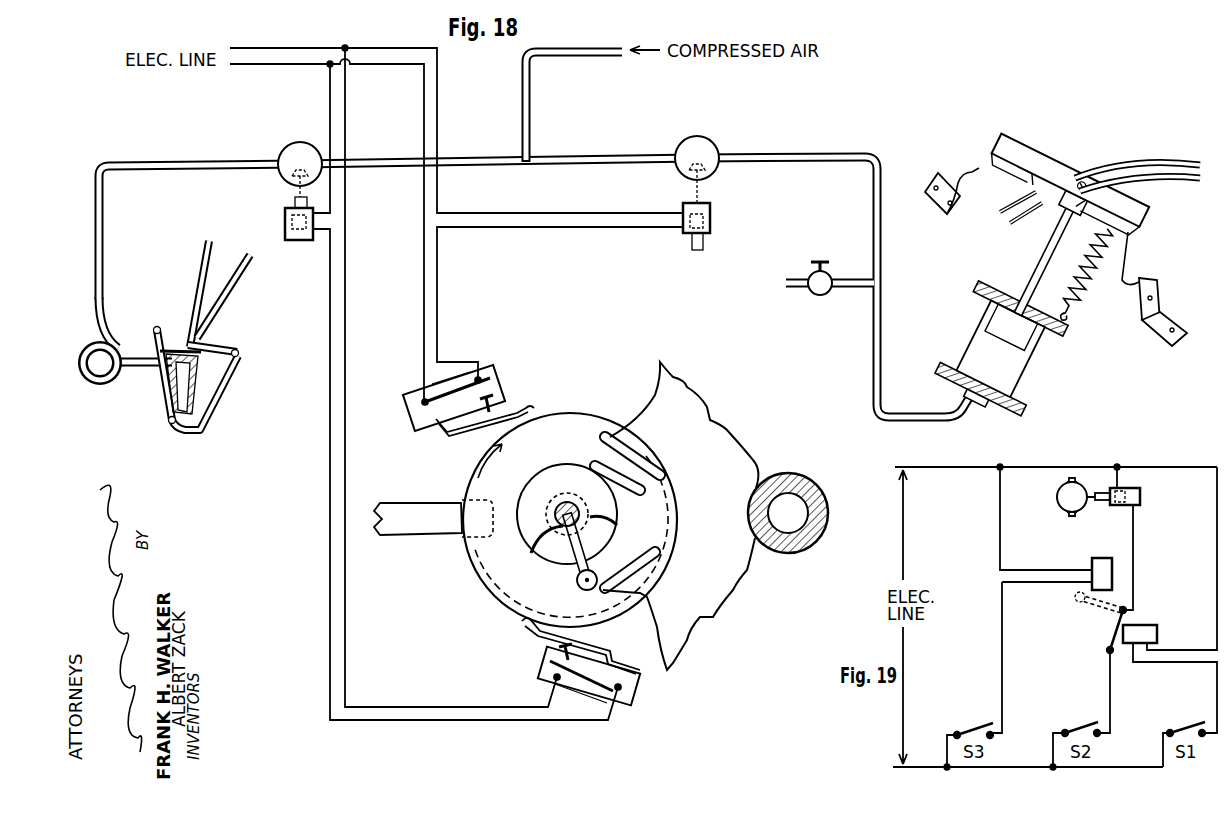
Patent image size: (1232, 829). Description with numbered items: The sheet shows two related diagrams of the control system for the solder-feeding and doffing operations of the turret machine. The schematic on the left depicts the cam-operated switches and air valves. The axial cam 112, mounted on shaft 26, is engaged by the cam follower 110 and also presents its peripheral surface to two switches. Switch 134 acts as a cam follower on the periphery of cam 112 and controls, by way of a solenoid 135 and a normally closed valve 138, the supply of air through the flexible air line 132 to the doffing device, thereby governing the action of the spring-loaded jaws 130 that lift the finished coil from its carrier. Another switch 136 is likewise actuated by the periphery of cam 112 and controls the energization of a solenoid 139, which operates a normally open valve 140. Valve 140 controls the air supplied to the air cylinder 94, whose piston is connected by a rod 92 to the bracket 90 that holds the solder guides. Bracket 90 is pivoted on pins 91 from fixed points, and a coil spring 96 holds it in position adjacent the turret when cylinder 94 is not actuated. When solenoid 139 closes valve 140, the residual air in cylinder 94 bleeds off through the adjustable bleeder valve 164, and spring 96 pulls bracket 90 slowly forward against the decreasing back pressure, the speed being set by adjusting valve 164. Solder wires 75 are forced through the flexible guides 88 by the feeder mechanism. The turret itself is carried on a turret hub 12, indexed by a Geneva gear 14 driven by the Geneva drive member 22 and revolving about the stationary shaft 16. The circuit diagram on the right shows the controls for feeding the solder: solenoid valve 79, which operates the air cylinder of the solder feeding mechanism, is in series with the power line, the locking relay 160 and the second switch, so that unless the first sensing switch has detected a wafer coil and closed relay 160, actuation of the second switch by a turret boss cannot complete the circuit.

In FIG. 18, the turret hub 12 is at (788, 528).
In FIG. 18, the Geneva gear 14 is at (700, 617).
In FIG. 18, the stationary shaft 16 is at (779, 523).
In FIG. 18, the Geneva drive member 22 is at (577, 582).
In FIG. 18, the shaft 26 is at (571, 531).
In FIG. 18, the solder wires 75 is at (1012, 216).
In FIG. 19, the solenoid valve 79 is at (1118, 507).
In FIG. 18, the flexible guides 88 is at (1125, 156).
In FIG. 18, the bracket 90 is at (1028, 146).
In FIG. 18, the pins 91 is at (960, 207).
In FIG. 18, the rod 92 is at (1043, 262).
In FIG. 18, the air cylinder 94 is at (1025, 370).
In FIG. 18, the coil spring 96 is at (1078, 286).
In FIG. 18, the cam follower 110 is at (452, 497).
In FIG. 18, the axial cam 112 is at (483, 588).
In FIG. 18, the spring-loaded jaws 130 is at (214, 294).
In FIG. 18, the flexible air line 132 is at (104, 244).
In FIG. 18, the switch 134 is at (537, 664).
In FIG. 18, the solenoid 135 is at (285, 223).
In FIG. 18, the switch 136 is at (503, 378).
In FIG. 18, the normally closed valve 138 is at (284, 150).
In FIG. 18, the solenoid 139 is at (711, 216).
In FIG. 18, the normally open valve 140 is at (713, 142).
In FIG. 19, the locking relay 160 is at (1097, 619).
In FIG. 18, the bleeder valve 164 is at (821, 296).